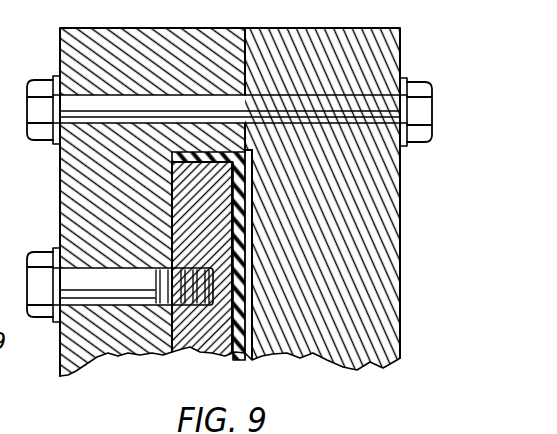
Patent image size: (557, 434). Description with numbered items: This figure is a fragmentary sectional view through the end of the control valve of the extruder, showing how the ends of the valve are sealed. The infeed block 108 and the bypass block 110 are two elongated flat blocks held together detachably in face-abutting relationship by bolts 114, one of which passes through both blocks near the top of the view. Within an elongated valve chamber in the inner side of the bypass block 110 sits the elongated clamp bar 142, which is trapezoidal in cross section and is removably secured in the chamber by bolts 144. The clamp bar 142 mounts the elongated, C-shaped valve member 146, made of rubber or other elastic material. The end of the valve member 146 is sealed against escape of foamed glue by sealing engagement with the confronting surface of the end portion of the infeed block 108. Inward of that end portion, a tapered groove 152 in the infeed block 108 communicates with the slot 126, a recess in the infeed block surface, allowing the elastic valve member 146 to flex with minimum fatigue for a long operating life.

The infeed block 108 is at (362, 201).
The bypass block 110 is at (100, 172).
The bolts 114 is at (418, 88).
The slot 126 is at (250, 357).
The clamp bar 142 is at (188, 349).
The bolts 144 is at (42, 258).
The valve member 146 is at (239, 358).
The tapered grooves 152 is at (255, 308).